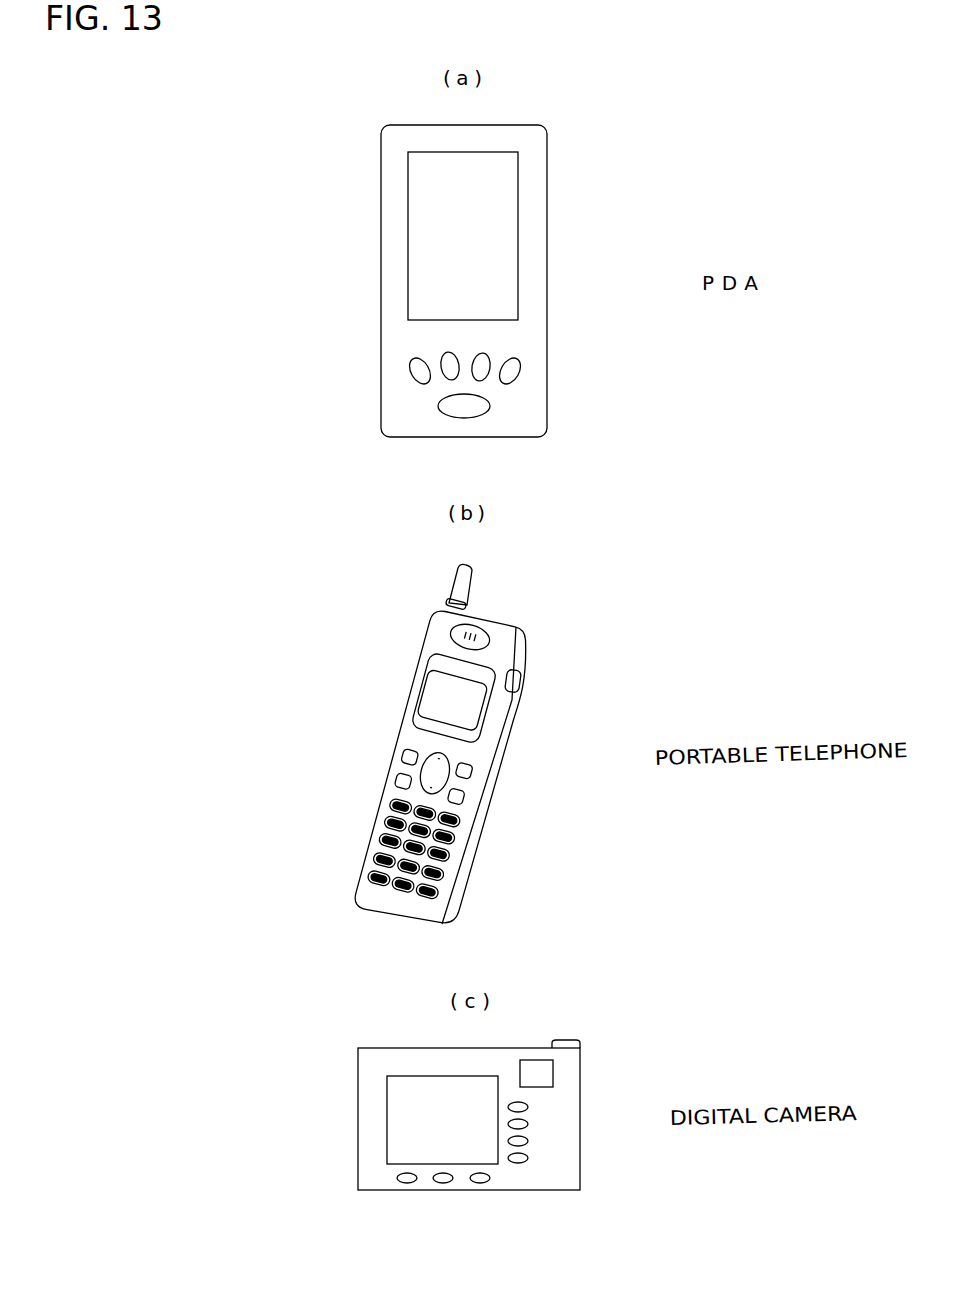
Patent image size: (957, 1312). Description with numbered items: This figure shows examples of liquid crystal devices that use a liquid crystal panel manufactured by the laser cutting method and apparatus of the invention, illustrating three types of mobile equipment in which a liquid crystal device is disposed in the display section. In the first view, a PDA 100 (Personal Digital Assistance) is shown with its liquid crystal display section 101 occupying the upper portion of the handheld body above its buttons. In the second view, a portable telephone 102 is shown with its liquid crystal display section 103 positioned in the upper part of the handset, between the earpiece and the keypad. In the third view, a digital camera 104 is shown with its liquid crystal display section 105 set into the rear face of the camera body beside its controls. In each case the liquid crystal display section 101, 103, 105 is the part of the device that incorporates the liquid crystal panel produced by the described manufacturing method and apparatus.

The PDA 100 is at (547, 227).
The liquid crystal display section for a PDA 101 is at (420, 232).
The portable telephone 102 is at (525, 647).
The liquid crystal display section for a portable telephone 103 is at (425, 697).
The digital camera 104 is at (572, 1090).
The liquid crystal display section for a digital camera 105 is at (397, 1113).